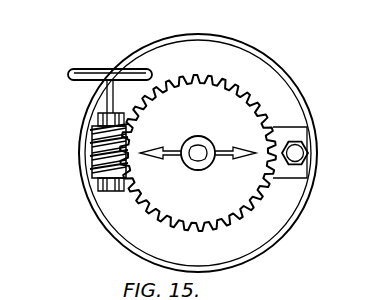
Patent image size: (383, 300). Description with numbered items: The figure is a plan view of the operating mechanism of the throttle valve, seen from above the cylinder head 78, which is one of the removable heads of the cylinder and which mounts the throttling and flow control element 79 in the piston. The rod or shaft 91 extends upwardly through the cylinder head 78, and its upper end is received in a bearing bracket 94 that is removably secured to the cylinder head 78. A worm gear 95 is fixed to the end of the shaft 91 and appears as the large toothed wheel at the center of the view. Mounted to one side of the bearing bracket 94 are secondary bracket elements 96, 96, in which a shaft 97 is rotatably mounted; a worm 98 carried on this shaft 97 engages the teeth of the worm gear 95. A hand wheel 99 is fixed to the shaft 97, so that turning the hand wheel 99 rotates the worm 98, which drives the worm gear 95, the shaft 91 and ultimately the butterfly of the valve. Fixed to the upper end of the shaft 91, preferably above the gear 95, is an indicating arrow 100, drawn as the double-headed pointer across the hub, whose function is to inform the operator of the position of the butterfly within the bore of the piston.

The cylinder head 78 is at (283, 217).
The throttling and flow control element 79 is at (279, 118).
The rod or shaft 91 is at (200, 148).
The bearing bracket 94 is at (300, 172).
The worm gear 95 is at (246, 103).
The secondary bracket elements 96 is at (97, 116).
The shaft 97 is at (110, 100).
The worm 98 is at (91, 152).
The hand wheel 99 is at (68, 73).
The indicating arrow 100 is at (231, 157).